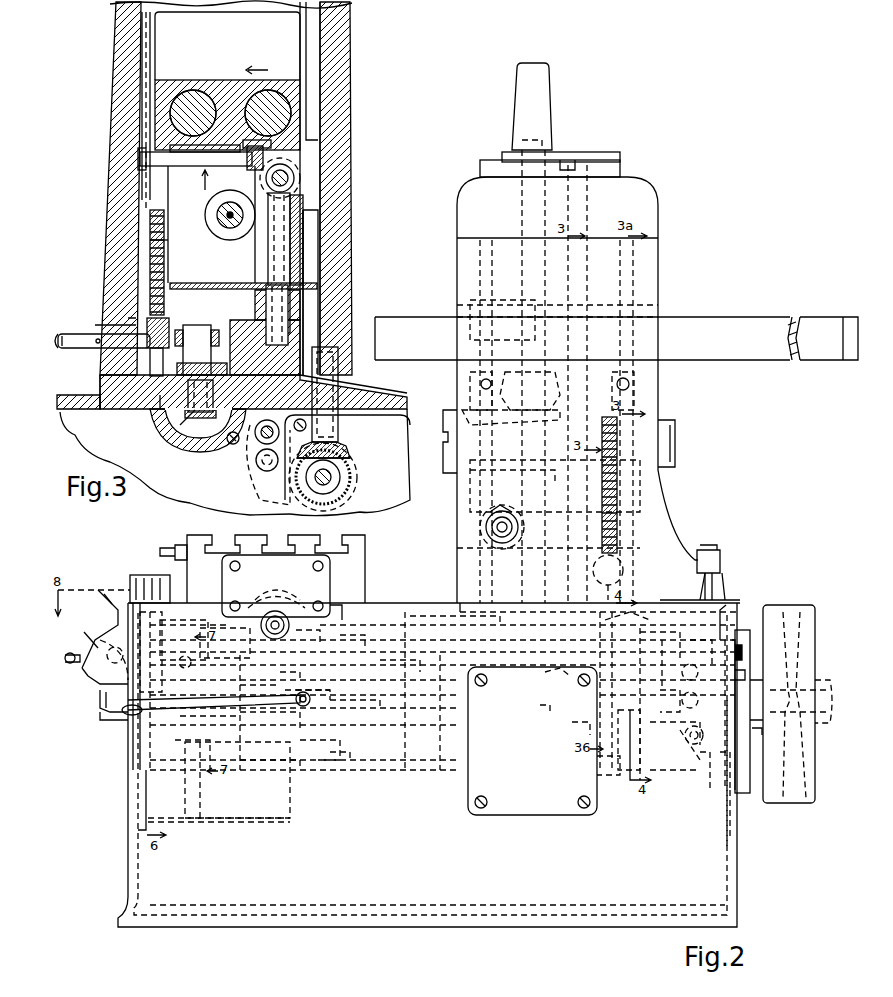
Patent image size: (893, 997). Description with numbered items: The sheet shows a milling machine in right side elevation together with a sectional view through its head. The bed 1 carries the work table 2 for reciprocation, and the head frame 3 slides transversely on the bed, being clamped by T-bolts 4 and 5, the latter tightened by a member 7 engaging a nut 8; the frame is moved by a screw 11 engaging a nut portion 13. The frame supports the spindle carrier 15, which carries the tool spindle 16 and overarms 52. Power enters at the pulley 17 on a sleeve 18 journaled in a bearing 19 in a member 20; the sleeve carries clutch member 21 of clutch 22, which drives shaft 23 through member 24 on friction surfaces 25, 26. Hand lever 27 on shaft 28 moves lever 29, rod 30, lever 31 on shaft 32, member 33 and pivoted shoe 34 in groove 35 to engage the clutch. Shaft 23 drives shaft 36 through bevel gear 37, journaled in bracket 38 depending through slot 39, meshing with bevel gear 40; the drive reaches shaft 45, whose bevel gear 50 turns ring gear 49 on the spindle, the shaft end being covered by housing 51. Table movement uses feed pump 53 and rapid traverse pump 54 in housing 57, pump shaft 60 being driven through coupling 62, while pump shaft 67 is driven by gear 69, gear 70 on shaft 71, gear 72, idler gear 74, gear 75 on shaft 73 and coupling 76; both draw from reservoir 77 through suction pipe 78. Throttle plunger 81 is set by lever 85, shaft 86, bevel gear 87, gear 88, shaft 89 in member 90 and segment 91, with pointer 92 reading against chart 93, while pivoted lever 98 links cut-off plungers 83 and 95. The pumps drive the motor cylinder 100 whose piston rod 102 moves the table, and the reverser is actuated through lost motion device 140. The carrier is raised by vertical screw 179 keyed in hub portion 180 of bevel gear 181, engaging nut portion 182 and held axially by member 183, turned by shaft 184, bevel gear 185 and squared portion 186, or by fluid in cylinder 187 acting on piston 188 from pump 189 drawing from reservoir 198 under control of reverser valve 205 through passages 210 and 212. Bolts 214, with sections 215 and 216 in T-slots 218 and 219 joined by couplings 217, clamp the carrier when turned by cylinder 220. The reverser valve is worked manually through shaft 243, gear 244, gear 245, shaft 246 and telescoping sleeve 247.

In FIG. 3, the bed 1 is at (398, 406).
In FIG. 2, the bed 1 is at (740, 845).
In FIG. 2, the work table 2 is at (370, 550).
In FIG. 3, the head frame 3 is at (320, 132).
In FIG. 2, the head frame 3 is at (675, 520).
In FIG. 2, the T-bolts 4 is at (716, 585).
In FIG. 3, the T-bolts 5 is at (261, 65).
In FIG. 2, the T-bolts 5 is at (512, 572).
In FIG. 2, the member 7 is at (484, 535).
In FIG. 2, the nut 8 is at (520, 518).
In FIG. 3, the screw 11 is at (250, 448).
In FIG. 3, the nut portion 13 is at (232, 444).
In FIG. 3, the spindle carrier 15 is at (218, 80).
In FIG. 2, the spindle carrier 15 is at (645, 302).
In FIG. 3, the tool spindle 16 is at (222, 230).
In FIG. 2, the tool spindle 16 is at (450, 480).
In FIG. 2, the pulley 17 is at (818, 620).
In FIG. 2, the sleeve 18 is at (790, 662).
In FIG. 2, the bearing 19 is at (760, 738).
In FIG. 2, the member 20 is at (748, 655).
In FIG. 2, the clutch member 21 is at (742, 628).
In FIG. 2, the clutch 22 is at (740, 672).
In FIG. 3, the shaft 23 is at (340, 482).
In FIG. 2, the shaft 23 is at (551, 718).
In FIG. 2, the clutch member 24 is at (706, 778).
In FIG. 2, the friction surface 25 is at (721, 772).
In FIG. 2, the friction surface 26 is at (704, 735).
In FIG. 2, the hand lever 27 is at (124, 722).
In FIG. 2, the shaft 28 is at (310, 702).
In FIG. 2, the lever 29 is at (290, 676).
In FIG. 2, the rod 30 is at (424, 670).
In FIG. 2, the lever 31 is at (665, 648).
In FIG. 2, the shaft 32 is at (676, 752).
In FIG. 2, the member 33 is at (670, 730).
In FIG. 2, the pivoted shoe 34 is at (678, 702).
In FIG. 2, the groove 35 is at (700, 652).
In FIG. 3, the shaft 36 is at (352, 284).
In FIG. 2, the shaft 36 is at (572, 572).
In FIG. 3, the bevel gear 37 is at (334, 505).
In FIG. 2, the bevel gear 37 is at (578, 732).
In FIG. 3, the bracket 38 is at (360, 380).
In FIG. 2, the bracket 38 is at (592, 760).
In FIG. 3, the slot 39 is at (364, 396).
In FIG. 3, the bevel gear 40 is at (346, 452).
In FIG. 2, the bevel gear 40 is at (548, 680).
In FIG. 2, the shaft 45 is at (520, 268).
In FIG. 2, the ring gear 49 is at (548, 498).
In FIG. 2, the bevel gear 50 is at (525, 398).
In FIG. 2, the housing 51 is at (551, 125).
In FIG. 2, the overarms 52 is at (735, 315).
In FIG. 2, the feed pump 53 is at (134, 730).
In FIG. 2, the rapid traverse pump 54 is at (252, 718).
In FIG. 2, the housing 57 is at (230, 760).
In FIG. 2, the shaft 60 is at (260, 679).
In FIG. 2, the coupling 62 is at (284, 690).
In FIG. 2, the shaft 67 is at (186, 752).
In FIG. 2, the gear 69 is at (720, 798).
In FIG. 2, the gear 70 is at (730, 600).
In FIG. 3, the shaft 71 is at (262, 445).
In FIG. 2, the shaft 71 is at (652, 654).
In FIG. 2, the gear 72 is at (350, 618).
In FIG. 2, the shaft 73 is at (305, 760).
In FIG. 2, the idler gear 74 is at (336, 690).
In FIG. 2, the gear 75 is at (334, 762).
In FIG. 2, the coupling member 76 is at (270, 765).
In FIG. 2, the reservoir 77 is at (140, 816).
In FIG. 2, the suction pipe 78 is at (198, 795).
In FIG. 2, the plunger 81 is at (153, 652).
In FIG. 2, the plunger 83 is at (184, 640).
In FIG. 2, the lever 85 is at (103, 598).
In FIG. 2, the shaft 86 is at (92, 620).
In FIG. 2, the bevel gear 87 is at (80, 670).
In FIG. 2, the gear 88 is at (92, 682).
In FIG. 2, the shaft 89 is at (120, 680).
In FIG. 2, the member 90 is at (98, 694).
In FIG. 2, the segment 91 is at (126, 644).
In FIG. 2, the pointer 92 is at (82, 640).
In FIG. 2, the dial or chart 93 is at (66, 652).
In FIG. 2, the plunger 95 is at (216, 665).
In FIG. 2, the pivoted lever 98 is at (192, 660).
In FIG. 2, the cylinder 100 is at (300, 604).
In FIG. 2, the piston rod 102 is at (272, 611).
In FIG. 2, the lost motion device 140 is at (89, 716).
In FIG. 3, the vertical screw 179 is at (165, 250).
In FIG. 3, the hub portion 180 is at (138, 395).
In FIG. 3, the bevel gear 181 is at (176, 328).
In FIG. 3, the nut portion 182 is at (170, 258).
In FIG. 3, the member 183 is at (222, 328).
In FIG. 3, the shaft 184 is at (112, 336).
In FIG. 3, the bevel gear 185 is at (116, 310).
In FIG. 3, the squared portion 186 is at (66, 349).
In FIG. 3, the cylinder 187 is at (170, 420).
In FIG. 3, the piston 188 is at (186, 430).
In FIG. 3, the pump 189 is at (260, 470).
In FIG. 2, the pump 189 is at (634, 755).
In FIG. 2, the reservoir 198 is at (675, 782).
In FIG. 2, the reverser valve 205 is at (637, 612).
In FIG. 3, the passage 210 is at (312, 340).
In FIG. 3, the passage 212 is at (306, 318).
In FIG. 3, the bolts 214 is at (208, 184).
In FIG. 2, the bolts 214 is at (474, 388).
In FIG. 3, the bolt section 215 is at (180, 162).
In FIG. 3, the bolt section 216 is at (310, 132).
In FIG. 3, the couplings 217 is at (252, 172).
In FIG. 3, the T-slot 218 is at (148, 66).
In FIG. 3, the T-slot 219 is at (318, 46).
In FIG. 3, the cylinder 220 is at (294, 178).
In FIG. 2, the shaft 243 is at (292, 644).
In FIG. 2, the gear 244 is at (360, 620).
In FIG. 2, the gear 245 is at (306, 690).
In FIG. 2, the shaft 246 is at (420, 610).
In FIG. 2, the sleeve 247 is at (466, 610).